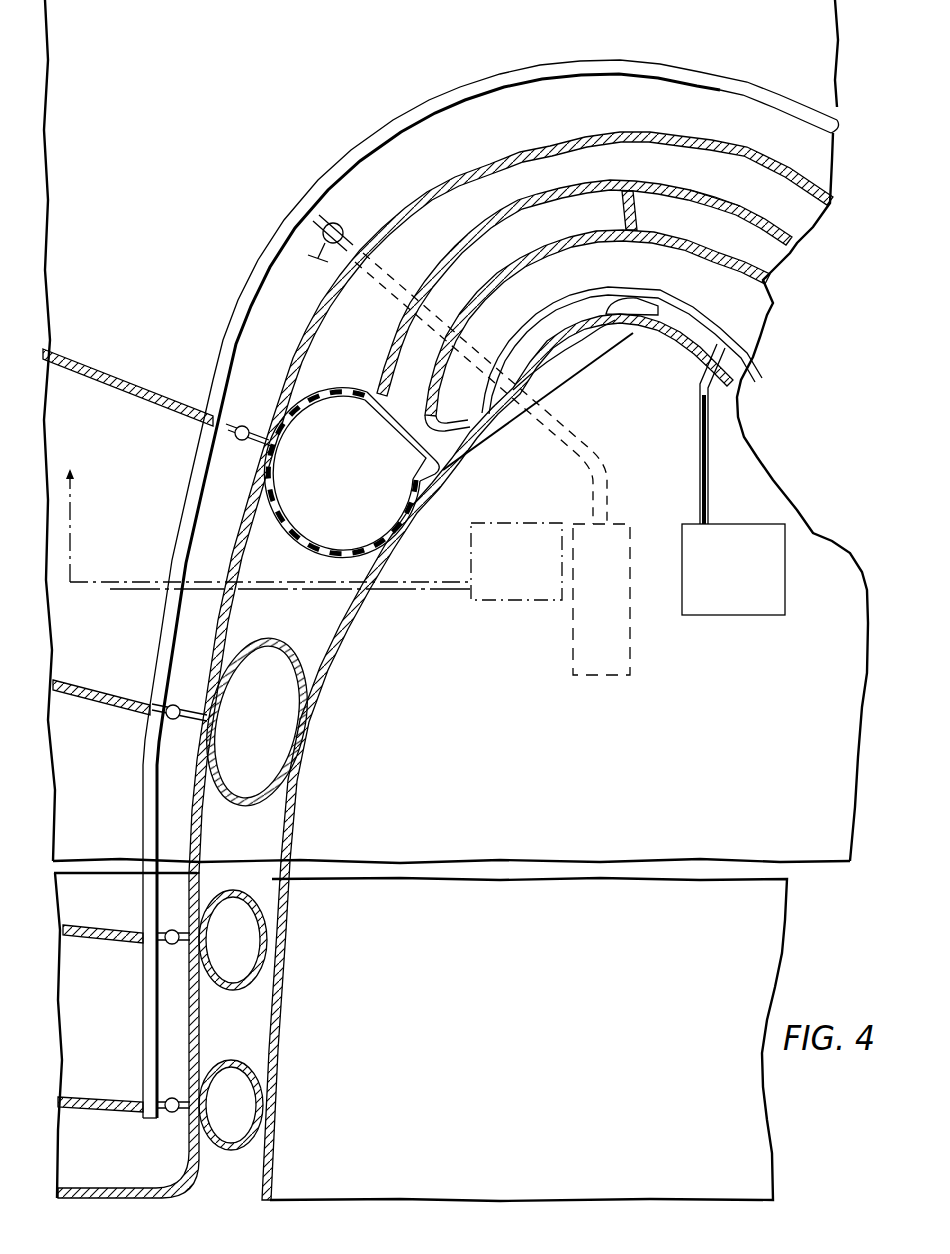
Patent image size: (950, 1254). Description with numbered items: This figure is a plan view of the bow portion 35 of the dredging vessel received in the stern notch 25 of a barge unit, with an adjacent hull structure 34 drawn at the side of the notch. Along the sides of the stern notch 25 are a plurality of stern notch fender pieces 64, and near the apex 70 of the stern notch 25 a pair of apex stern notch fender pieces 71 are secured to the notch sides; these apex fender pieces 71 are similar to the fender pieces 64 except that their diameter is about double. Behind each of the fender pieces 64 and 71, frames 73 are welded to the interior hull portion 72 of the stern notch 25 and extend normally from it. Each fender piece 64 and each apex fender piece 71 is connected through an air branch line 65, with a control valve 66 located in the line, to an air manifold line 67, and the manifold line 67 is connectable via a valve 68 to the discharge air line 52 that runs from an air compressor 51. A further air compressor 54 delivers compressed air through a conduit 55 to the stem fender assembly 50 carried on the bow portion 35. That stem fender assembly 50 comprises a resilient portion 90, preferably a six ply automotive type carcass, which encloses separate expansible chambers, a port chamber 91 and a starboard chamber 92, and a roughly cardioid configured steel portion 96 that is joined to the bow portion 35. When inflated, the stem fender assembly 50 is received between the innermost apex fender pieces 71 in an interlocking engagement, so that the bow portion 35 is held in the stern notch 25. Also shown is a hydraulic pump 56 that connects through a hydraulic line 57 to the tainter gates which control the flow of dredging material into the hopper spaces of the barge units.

The stern notch 25 is at (437, 205).
The inner wall 34 is at (258, 1184).
The bow portion 35 is at (578, 356).
The stem fender assembly 50 is at (534, 198).
The air compressor 51 is at (585, 609).
The discharge air line 52 is at (568, 438).
The further air compressor 54 is at (713, 580).
The conduit 55 is at (700, 428).
The hydraulic pump 56 is at (498, 577).
The hydraulic line 57 is at (445, 592).
The stern notch fender pieces 64 is at (233, 890).
The air branch line 65 is at (256, 430).
The control valve 66 is at (238, 426).
The air manifold line 67 is at (190, 487).
The valve 68 is at (343, 232).
The apex 70 is at (645, 145).
The apex stern notch fender pieces 71 is at (348, 390).
The interior hull portion 72 is at (218, 632).
The frames 73 is at (118, 358).
The resilient portion 90 is at (690, 191).
The port chamber 91 is at (527, 232).
The starboard chamber 92 is at (670, 224).
The steel portion 96 is at (685, 243).